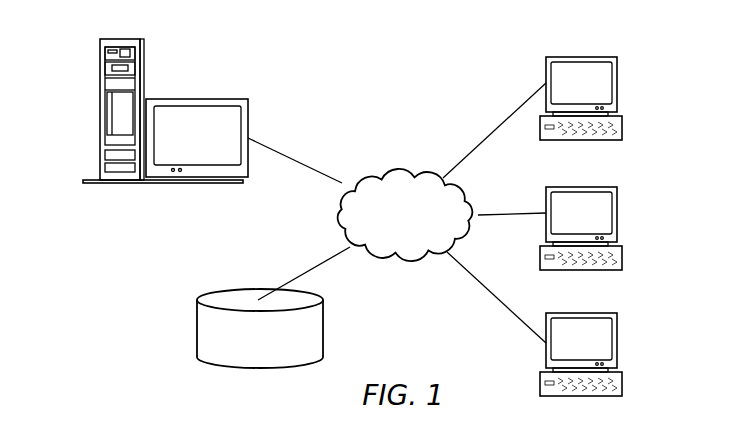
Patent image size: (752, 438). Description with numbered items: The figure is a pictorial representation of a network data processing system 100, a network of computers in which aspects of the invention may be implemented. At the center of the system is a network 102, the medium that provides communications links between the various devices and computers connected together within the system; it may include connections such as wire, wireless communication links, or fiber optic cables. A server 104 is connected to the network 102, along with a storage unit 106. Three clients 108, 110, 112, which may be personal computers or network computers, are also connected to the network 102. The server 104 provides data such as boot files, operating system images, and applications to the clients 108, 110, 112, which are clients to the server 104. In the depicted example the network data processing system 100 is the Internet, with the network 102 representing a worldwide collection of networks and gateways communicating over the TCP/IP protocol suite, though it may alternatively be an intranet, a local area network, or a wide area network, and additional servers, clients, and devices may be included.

The network data processing system 100 is at (453, 69).
The network 102 is at (377, 172).
The server 104 is at (100, 112).
The storage unit 106 is at (197, 329).
The client 108 is at (617, 85).
The client 110 is at (617, 215).
The client 112 is at (617, 340).